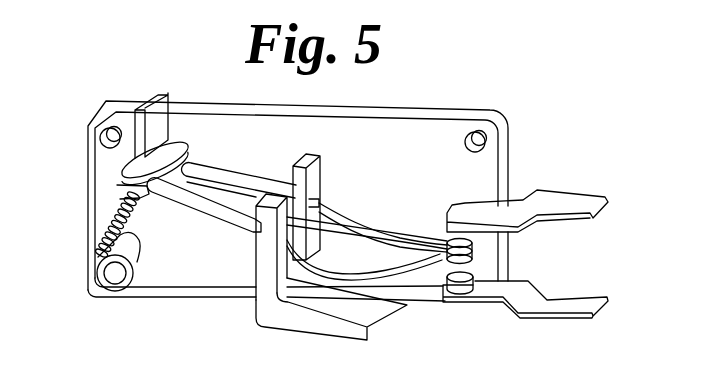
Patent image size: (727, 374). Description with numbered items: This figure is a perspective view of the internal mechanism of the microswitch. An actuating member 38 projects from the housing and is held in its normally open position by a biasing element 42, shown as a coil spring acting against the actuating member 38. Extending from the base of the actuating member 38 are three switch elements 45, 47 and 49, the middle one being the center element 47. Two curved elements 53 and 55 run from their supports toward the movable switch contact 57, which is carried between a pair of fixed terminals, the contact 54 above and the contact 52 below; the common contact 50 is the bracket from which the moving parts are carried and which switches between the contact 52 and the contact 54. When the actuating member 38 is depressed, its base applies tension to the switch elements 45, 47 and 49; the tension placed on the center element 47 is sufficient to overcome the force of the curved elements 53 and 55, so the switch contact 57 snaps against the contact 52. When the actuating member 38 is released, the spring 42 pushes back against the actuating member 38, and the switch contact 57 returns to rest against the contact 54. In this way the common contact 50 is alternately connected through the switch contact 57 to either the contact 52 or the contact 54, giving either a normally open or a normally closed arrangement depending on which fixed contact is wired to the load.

The actuating member 38 is at (160, 93).
The biasing element 42 is at (108, 221).
The switch element 45 is at (225, 166).
The center element 47 is at (252, 192).
The switch element 49 is at (215, 229).
The common contact 50 is at (300, 333).
The contact 52 is at (573, 300).
The curved element 53 is at (325, 205).
The contact 54 is at (556, 204).
The curved element 55 is at (423, 263).
The switch contact 57 is at (474, 254).